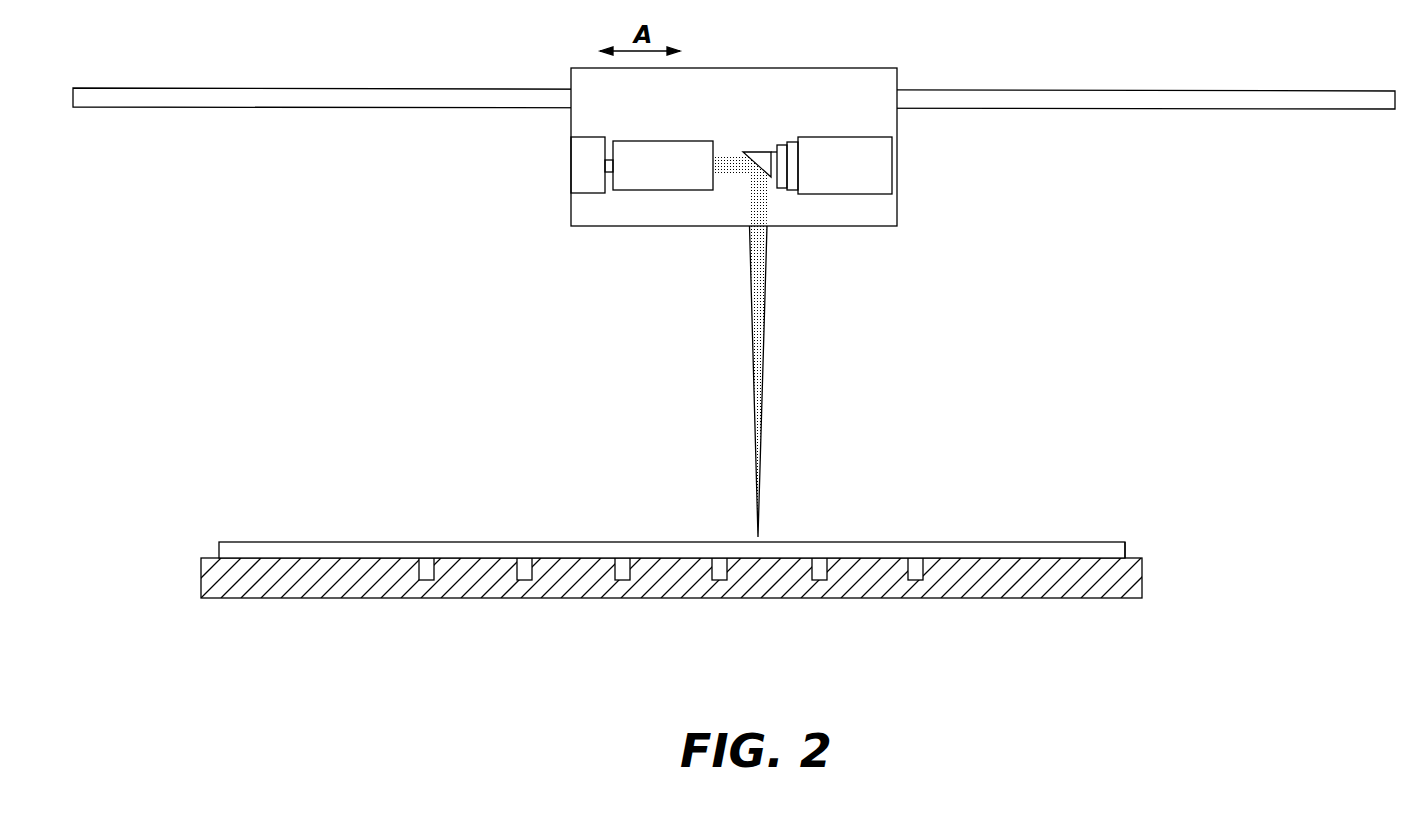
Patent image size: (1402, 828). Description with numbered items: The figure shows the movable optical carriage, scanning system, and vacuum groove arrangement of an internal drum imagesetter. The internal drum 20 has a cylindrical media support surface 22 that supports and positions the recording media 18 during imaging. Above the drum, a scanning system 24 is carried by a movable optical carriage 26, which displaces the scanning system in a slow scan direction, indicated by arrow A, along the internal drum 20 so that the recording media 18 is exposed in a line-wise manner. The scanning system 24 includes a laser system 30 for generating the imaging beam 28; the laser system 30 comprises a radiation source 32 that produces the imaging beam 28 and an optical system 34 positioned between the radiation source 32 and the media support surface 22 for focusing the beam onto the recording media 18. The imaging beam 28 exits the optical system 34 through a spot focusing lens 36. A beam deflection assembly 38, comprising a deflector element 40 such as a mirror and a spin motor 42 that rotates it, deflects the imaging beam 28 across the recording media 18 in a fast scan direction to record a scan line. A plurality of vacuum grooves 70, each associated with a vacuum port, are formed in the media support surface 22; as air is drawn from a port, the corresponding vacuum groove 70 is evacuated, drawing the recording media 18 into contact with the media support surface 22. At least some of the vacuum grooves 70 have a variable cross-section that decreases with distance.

The recording media 18 is at (1060, 550).
The internal drum 20 is at (1060, 587).
The media support surface 22 is at (1133, 558).
The scanning system 24 is at (660, 227).
The movable optical carriage 26 is at (840, 80).
The imaging beam 28 is at (760, 365).
The laser system 30 is at (630, 206).
The radiation source 32 is at (583, 187).
The optical system 34 is at (677, 183).
The spot focusing lens 36 is at (716, 168).
The beam deflection assembly 38 is at (876, 208).
The deflector element 40 is at (773, 178).
The spin motor 42 is at (827, 188).
The vacuum grooves 70 is at (523, 578).